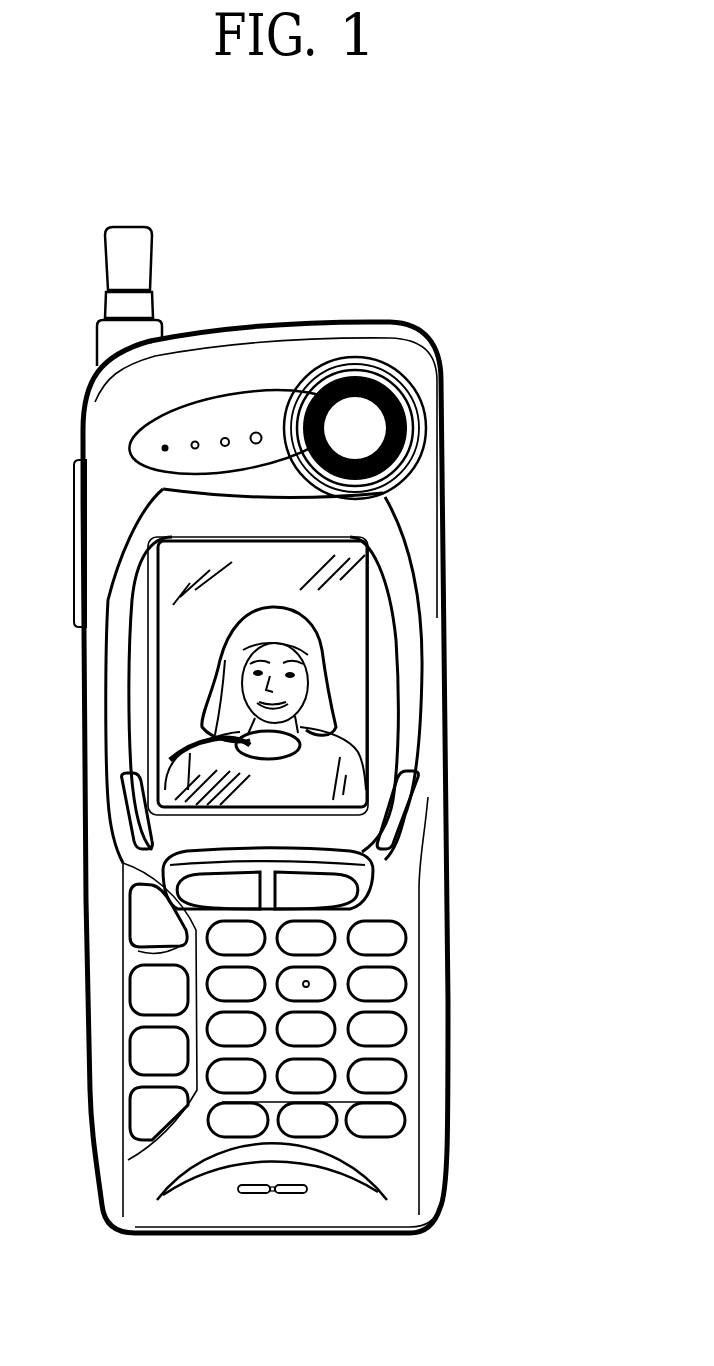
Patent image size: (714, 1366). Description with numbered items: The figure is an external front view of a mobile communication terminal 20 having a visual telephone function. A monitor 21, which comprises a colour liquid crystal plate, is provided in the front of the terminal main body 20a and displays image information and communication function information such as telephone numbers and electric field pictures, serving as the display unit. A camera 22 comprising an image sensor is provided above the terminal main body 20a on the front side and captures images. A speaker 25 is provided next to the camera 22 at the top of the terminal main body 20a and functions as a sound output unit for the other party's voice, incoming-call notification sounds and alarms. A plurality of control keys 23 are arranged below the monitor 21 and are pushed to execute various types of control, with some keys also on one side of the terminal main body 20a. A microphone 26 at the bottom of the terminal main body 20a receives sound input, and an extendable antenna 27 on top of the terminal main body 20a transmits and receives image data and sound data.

The mobile communication terminal 20 is at (449, 282).
The terminal main body 20a is at (443, 708).
The monitor 21 is at (348, 655).
The camera 22 is at (366, 428).
The control key 23 is at (385, 942).
The speaker 25 is at (228, 437).
The microphone 26 is at (267, 1200).
The extendable antenna 27 is at (128, 247).